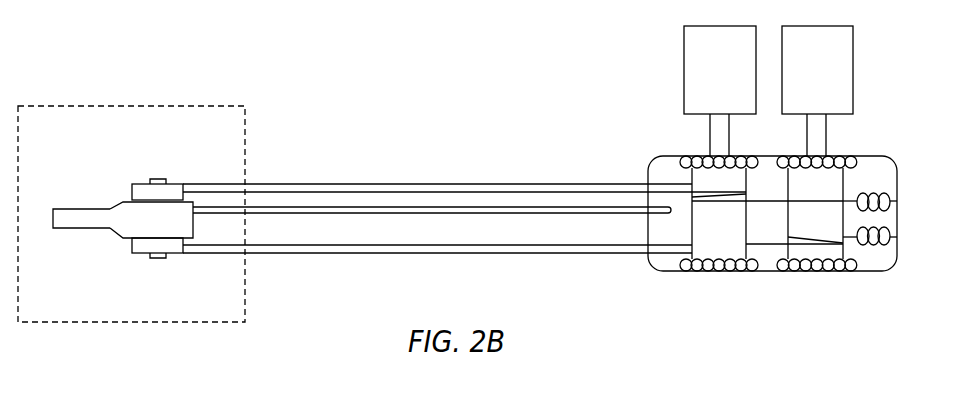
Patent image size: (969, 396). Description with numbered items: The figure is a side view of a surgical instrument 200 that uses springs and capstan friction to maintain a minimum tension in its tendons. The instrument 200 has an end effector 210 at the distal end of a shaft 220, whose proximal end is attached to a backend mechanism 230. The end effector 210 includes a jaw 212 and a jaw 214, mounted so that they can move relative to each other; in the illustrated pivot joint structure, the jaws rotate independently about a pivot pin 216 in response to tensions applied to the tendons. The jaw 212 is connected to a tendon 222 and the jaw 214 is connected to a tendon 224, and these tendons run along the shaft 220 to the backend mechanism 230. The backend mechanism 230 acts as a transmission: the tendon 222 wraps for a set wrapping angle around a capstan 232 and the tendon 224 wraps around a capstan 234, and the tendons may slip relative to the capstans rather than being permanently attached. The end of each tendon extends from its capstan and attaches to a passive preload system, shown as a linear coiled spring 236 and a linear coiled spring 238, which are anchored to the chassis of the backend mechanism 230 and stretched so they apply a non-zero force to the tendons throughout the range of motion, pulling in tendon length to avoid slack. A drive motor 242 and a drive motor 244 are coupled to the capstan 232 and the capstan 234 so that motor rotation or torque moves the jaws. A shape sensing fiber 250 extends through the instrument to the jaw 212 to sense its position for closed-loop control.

The surgical instrument 200 is at (512, 70).
The end effector 210 is at (209, 141).
The jaw 212 is at (112, 206).
The jaw 214 is at (88, 229).
The pivot pin 216 is at (160, 258).
The shaft 220 is at (463, 183).
The tendon 222 is at (343, 184).
The tendon 224 is at (343, 254).
The backend mechanism 230 is at (667, 157).
The capstan 232 is at (736, 225).
The capstan 234 is at (833, 225).
The linear coiled spring 236 is at (882, 194).
The linear coiled spring 238 is at (873, 245).
The drive motor 242 is at (736, 81).
The drive motor 244 is at (833, 81).
The shape sensing fiber 250 is at (363, 214).